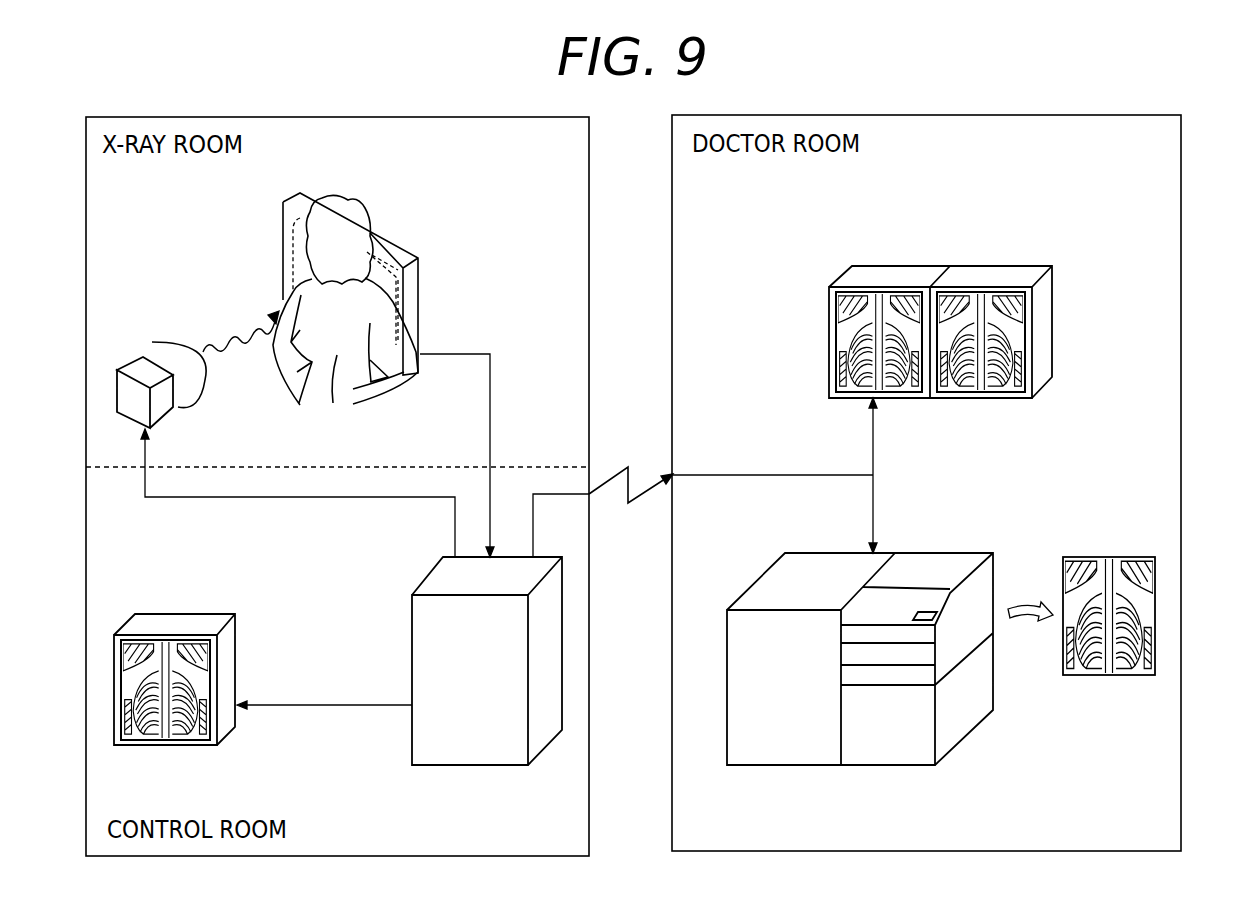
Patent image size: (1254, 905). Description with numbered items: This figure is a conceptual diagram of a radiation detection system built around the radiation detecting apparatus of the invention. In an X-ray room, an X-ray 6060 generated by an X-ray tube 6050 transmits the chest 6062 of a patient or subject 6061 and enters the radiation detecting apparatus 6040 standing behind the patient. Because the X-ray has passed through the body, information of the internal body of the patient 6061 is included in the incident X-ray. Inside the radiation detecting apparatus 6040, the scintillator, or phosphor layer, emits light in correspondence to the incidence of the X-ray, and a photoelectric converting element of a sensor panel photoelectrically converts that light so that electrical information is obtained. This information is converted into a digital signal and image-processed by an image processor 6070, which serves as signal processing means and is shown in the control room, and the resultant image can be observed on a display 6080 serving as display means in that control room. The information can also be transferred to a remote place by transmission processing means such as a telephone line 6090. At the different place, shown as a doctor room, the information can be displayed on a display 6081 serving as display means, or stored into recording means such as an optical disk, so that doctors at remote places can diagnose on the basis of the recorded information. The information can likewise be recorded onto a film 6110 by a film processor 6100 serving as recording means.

The radiation detecting apparatus 6040 is at (404, 284).
The X-ray tube 6050 is at (138, 365).
The X-ray 6060 is at (237, 331).
The patient or subject 6061 is at (360, 206).
The chest 6062 is at (333, 403).
The image processor 6070 is at (442, 757).
The display 6080 is at (173, 618).
The display 6081 is at (895, 266).
The telephone line 6090 is at (628, 467).
The film processor 6100 is at (750, 752).
The film 6110 is at (1116, 557).